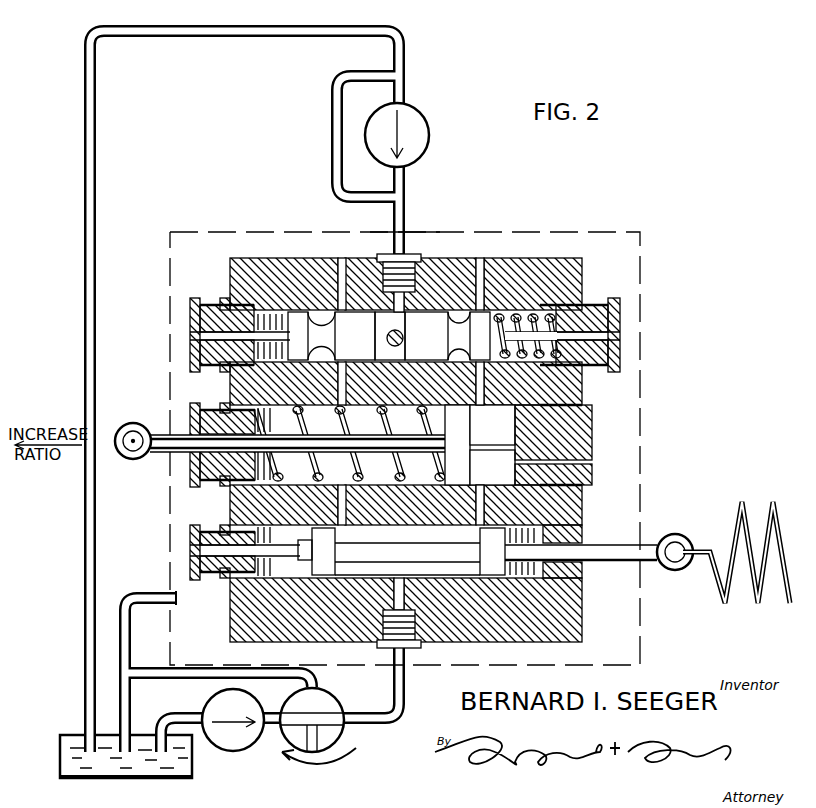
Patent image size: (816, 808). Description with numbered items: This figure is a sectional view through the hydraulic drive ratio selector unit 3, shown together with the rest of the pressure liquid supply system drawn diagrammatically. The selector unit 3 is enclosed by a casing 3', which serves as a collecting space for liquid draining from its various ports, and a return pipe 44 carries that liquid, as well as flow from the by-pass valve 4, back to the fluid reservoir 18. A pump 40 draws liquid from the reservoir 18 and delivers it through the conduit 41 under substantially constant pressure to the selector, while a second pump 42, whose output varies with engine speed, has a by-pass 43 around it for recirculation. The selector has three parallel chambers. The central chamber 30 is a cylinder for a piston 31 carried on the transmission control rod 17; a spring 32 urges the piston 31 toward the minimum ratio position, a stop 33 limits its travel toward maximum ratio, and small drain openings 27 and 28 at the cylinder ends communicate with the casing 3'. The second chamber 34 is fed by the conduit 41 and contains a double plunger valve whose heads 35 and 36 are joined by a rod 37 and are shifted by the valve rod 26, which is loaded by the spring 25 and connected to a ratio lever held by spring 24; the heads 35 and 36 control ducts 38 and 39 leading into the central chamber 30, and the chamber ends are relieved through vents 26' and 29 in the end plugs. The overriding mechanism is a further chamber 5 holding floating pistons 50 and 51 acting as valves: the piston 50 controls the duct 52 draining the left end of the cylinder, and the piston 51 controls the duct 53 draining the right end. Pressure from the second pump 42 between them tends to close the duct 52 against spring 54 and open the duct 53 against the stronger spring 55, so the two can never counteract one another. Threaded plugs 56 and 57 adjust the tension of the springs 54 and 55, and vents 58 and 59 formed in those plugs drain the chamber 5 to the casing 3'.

The drive ratio selector unit 3 is at (405, 435).
The casing 3' is at (449, 223).
The by-pass valve 4 is at (345, 733).
The further chamber 5 is at (398, 451).
The transmission control rod 17 is at (150, 432).
The fluid reservoir 18 is at (60, 735).
The spring 24 is at (735, 520).
The spring 25 is at (540, 538).
The valve rod 26 is at (599, 542).
The vent 26' is at (614, 574).
The drain opening 27 is at (592, 462).
The drain opening 28 is at (195, 460).
The vent 29 is at (200, 551).
The central chamber 30 is at (492, 487).
The piston 31 is at (404, 391).
The spring 32 is at (428, 430).
The stop 33 is at (330, 435).
The second chamber 34 is at (407, 571).
The valve head 35 is at (316, 550).
The valve head 36 is at (492, 551).
The rod 37 is at (407, 552).
The duct 38 is at (345, 525).
The duct 39 is at (478, 524).
The pump 40 is at (246, 752).
The conduit 41 is at (406, 680).
The second pump 42 is at (463, 117).
The by-pass 43 is at (336, 133).
The return pipe 44 is at (170, 690).
The floating piston 50 is at (355, 336).
The floating piston 51 is at (426, 336).
The duct 52 is at (376, 418).
The duct 53 is at (504, 420).
The spring 54 is at (296, 336).
The spring 55 is at (504, 336).
The plug 56 is at (200, 298).
The plug 57 is at (612, 298).
The vent 58 is at (200, 333).
The vent 59 is at (620, 338).